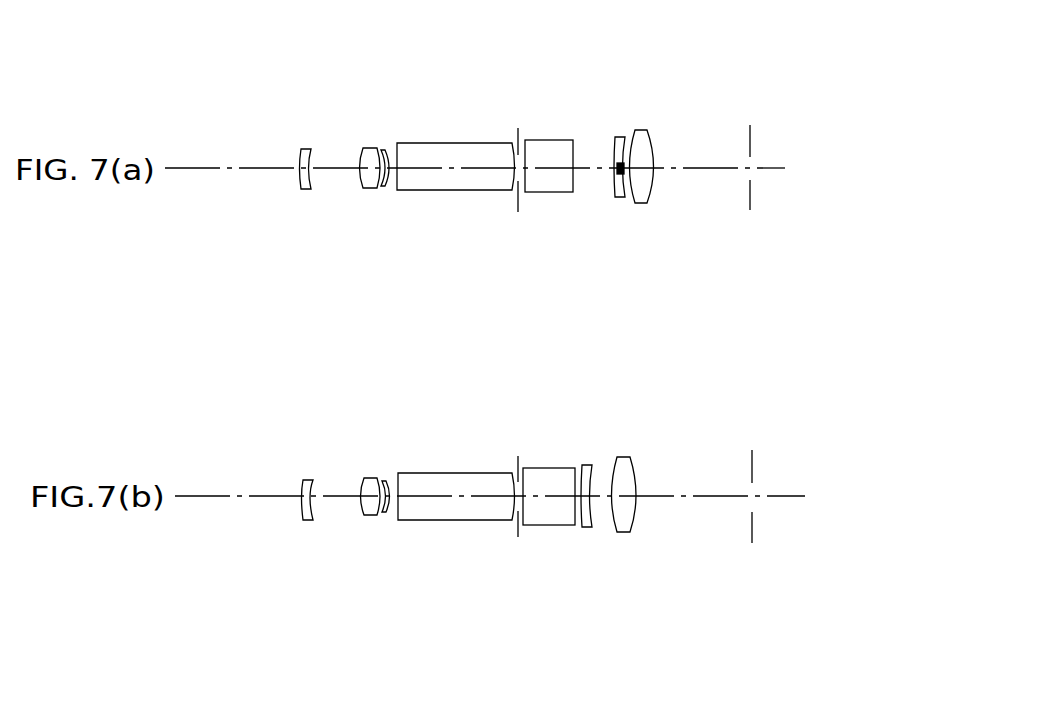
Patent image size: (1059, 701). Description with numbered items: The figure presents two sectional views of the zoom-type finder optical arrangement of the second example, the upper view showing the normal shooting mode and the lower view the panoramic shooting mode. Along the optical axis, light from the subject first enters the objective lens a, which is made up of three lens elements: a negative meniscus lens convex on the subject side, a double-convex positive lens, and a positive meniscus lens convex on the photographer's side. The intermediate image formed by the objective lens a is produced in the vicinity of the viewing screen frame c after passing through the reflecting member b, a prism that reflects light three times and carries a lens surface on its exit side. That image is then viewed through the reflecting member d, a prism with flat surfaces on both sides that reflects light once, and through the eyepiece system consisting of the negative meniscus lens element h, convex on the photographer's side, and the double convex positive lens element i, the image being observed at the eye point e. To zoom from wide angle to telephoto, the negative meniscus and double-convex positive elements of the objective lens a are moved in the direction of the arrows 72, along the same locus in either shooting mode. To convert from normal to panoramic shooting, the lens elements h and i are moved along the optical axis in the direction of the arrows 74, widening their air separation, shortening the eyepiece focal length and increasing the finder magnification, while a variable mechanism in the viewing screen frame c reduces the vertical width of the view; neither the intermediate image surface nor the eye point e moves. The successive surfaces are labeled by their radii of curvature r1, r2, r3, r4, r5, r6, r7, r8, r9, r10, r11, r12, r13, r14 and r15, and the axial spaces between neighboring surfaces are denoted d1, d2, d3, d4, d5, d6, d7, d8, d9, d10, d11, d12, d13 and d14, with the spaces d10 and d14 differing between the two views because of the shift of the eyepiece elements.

In FIG. 7A, the arrows 72 is at (371, 197).
In FIG. 7B, the arrows 72 is at (363, 527).
In FIG. 7A, the arrows 74 is at (616, 242).
In FIG. 7B, the arrows 74 is at (608, 494).
In FIG. 7A, the objective lens a is at (390, 78).
In FIG. 7A, the reflecting member b is at (508, 78).
In FIG. 7A, the viewing screen frame c is at (517, 121).
In FIG. 7A, the reflecting member d is at (583, 78).
In FIG. 7A, the negative meniscus lens element h is at (620, 114).
In FIG. 7A, the double convex positive lens element i is at (643, 117).
In FIG. 7A, the eye point e is at (744, 120).
In FIG. 7A, the radius of curvature r1 is at (302, 168).
In FIG. 7A, the radius of curvature r2 is at (308, 150).
In FIG. 7A, the radius of curvature r3 is at (360, 160).
In FIG. 7A, the radius of curvature r4 is at (378, 156).
In FIG. 7A, the radius of curvature r5 is at (383, 152).
In FIG. 7A, the radius of curvature r6 is at (391, 150).
In FIG. 7A, the radius of curvature r7 is at (398, 146).
In FIG. 7A, the radius of curvature r8 is at (513, 144).
In FIG. 7A, the radius of curvature r9 is at (527, 142).
In FIG. 7A, the radius of curvature r10 is at (572, 142).
In FIG. 7A, the radius of curvature r11 is at (619, 168).
In FIG. 7A, the radius of curvature r12 is at (622, 168).
In FIG. 7A, the radius of curvature r13 is at (636, 134).
In FIG. 7A, the radius of curvature r14 is at (657, 142).
In FIG. 7A, the radius of curvature r15 is at (748, 138).
In FIG. 7A, the space between lens surfaces d1 is at (302, 168).
In FIG. 7A, the space between lens surfaces d2 is at (331, 186).
In FIG. 7A, the space between lens surfaces d3 is at (372, 190).
In FIG. 7A, the space between lens surfaces d4 is at (385, 188).
In FIG. 7A, the space between lens surfaces d5 is at (390, 187).
In FIG. 7A, the space between lens surfaces d6 is at (394, 185).
In FIG. 7A, the space between lens surfaces d7 is at (449, 186).
In FIG. 7A, the space between lens surfaces d8 is at (519, 183).
In FIG. 7A, the space between lens surfaces d9 is at (549, 186).
In FIG. 7A, the space between lens surfaces d10 is at (597, 186).
In FIG. 7A, the space between lens surfaces d11 is at (620, 178).
In FIG. 7A, the space between lens surfaces d12 is at (622, 178).
In FIG. 7A, the space between lens surfaces d13 is at (655, 196).
In FIG. 7A, the space between lens surfaces d14 is at (700, 186).